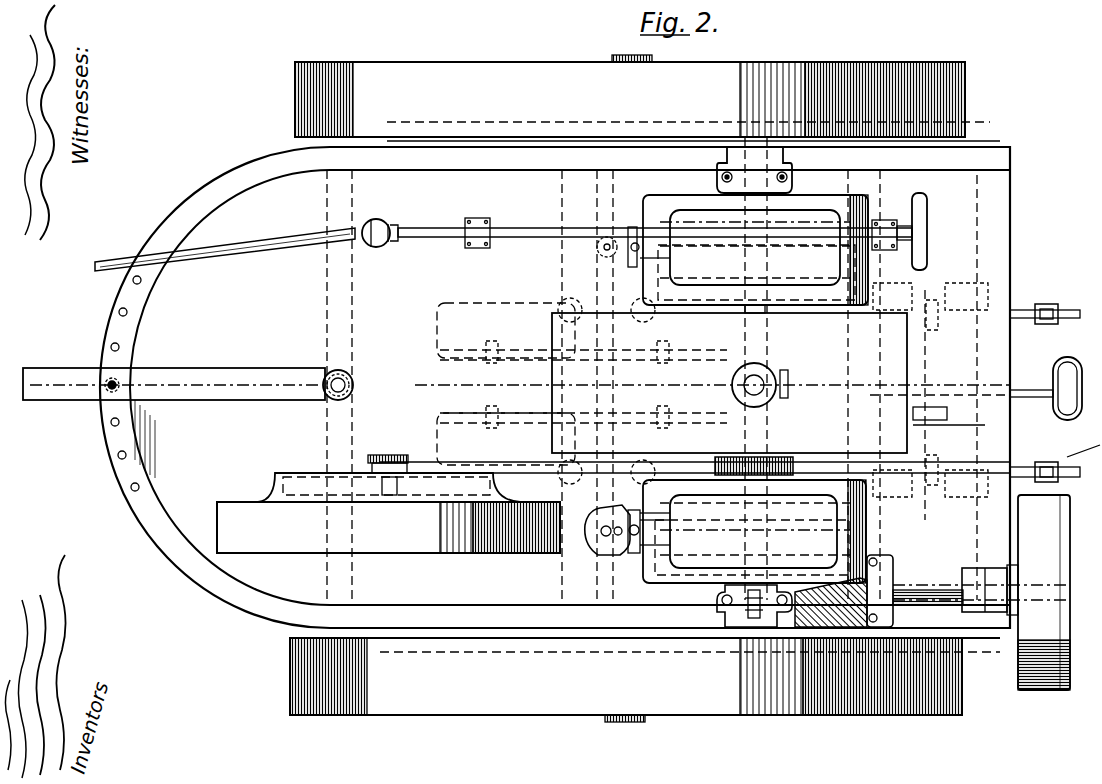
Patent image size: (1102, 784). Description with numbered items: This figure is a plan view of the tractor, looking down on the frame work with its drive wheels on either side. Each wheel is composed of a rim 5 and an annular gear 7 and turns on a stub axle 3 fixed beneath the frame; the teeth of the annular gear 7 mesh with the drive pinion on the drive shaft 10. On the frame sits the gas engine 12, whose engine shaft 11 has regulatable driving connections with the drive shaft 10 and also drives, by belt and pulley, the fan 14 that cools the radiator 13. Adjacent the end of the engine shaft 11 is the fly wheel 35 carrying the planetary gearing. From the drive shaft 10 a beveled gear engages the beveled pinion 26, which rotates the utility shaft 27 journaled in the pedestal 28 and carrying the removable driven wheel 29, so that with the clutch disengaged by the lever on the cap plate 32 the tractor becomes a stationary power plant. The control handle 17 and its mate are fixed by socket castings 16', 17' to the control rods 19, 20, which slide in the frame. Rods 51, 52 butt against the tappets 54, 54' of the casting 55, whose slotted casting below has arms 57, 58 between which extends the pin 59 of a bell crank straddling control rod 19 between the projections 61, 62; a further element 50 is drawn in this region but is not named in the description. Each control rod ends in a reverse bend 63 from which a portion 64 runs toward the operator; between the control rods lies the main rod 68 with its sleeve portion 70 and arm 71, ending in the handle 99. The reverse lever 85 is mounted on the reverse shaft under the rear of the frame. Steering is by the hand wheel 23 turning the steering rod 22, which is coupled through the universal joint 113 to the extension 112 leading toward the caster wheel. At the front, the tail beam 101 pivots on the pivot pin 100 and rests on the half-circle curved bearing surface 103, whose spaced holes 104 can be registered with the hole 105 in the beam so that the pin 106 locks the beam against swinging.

The stub axle 3 is at (623, 723).
The rim 5 is at (295, 92).
The annular gear 7 is at (440, 636).
The drive shaft 10 is at (755, 389).
The engine shaft 11 is at (755, 456).
The gas engine 12 is at (729, 383).
The radiator 13 is at (388, 527).
The fan 14 is at (298, 492).
The socket casting 16' is at (1055, 454).
The control handle 17 is at (1045, 284).
The socket casting 17' is at (1064, 298).
The control rod 19 is at (948, 470).
The control rod 20 is at (486, 315).
The steering rod 22 is at (524, 237).
The hand wheel 23 is at (927, 208).
The beveled pinion 26 is at (895, 530).
The utility shaft 27 is at (935, 590).
The pedestal 28 is at (993, 592).
The driven wheel 29 is at (1070, 516).
The cap plate 32 is at (717, 612).
The fly wheel 35 is at (662, 435).
The hook body 50 is at (598, 530).
The rod 51 is at (665, 580).
The rod 52 is at (648, 515).
The tappet 54 is at (633, 398).
The tappet 54' is at (578, 462).
The casting 55 is at (616, 540).
The arm 57 is at (596, 552).
The arm 58 is at (604, 525).
The pin 59 is at (605, 556).
The projection 61 is at (660, 318).
The projection 62 is at (562, 305).
The reverse bend 63 is at (437, 325).
The portion 64 is at (624, 334).
The main rod 68 is at (1030, 389).
The sleeve portion 70 is at (468, 374).
The arm 71 is at (683, 370).
The reverse lever 85 is at (990, 418).
The handle 99 is at (1068, 358).
The pivot pin 100 is at (352, 382).
The tail beam 101 is at (70, 378).
The curved bearing surface 103 is at (148, 522).
The holes 104 is at (138, 485).
The hole 105 is at (90, 410).
The pin 106 is at (120, 380).
The extension 112 is at (273, 243).
The universal joint 113 is at (384, 225).